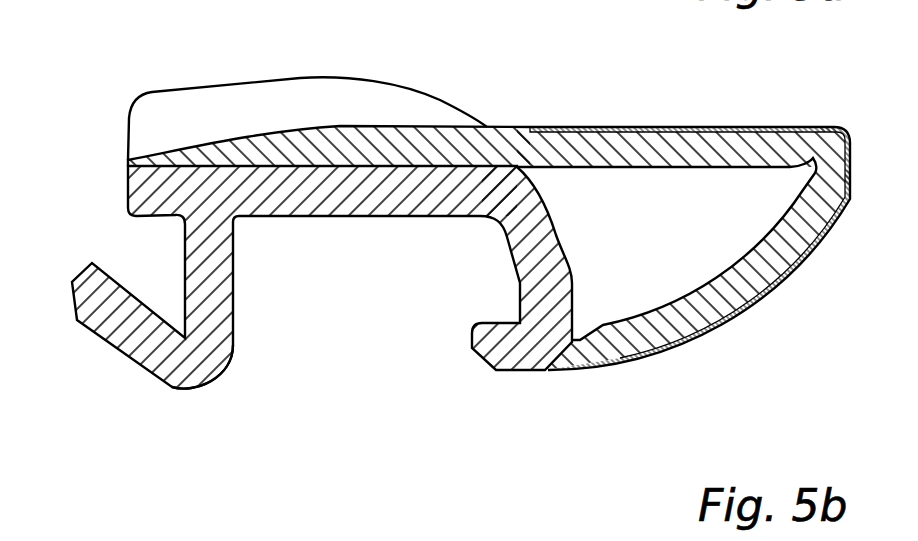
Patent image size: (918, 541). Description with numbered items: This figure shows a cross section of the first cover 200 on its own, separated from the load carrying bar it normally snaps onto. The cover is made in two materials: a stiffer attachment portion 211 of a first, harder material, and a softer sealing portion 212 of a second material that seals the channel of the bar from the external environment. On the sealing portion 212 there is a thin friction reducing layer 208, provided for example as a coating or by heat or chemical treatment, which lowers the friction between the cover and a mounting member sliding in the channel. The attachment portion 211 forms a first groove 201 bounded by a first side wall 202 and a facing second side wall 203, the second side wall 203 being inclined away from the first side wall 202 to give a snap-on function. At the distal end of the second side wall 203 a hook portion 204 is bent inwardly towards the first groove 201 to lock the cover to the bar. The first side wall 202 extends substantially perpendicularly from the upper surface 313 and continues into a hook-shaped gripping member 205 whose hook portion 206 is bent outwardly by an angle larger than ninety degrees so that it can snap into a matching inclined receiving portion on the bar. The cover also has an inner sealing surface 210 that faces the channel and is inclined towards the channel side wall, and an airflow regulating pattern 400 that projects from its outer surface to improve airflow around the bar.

The airflow regulating pattern 400 is at (302, 97).
The upper surface 313 is at (360, 127).
The sealing portion 212 is at (513, 127).
The friction reducing layer 208 is at (830, 128).
The second side wall 203 is at (512, 255).
The first groove 201 is at (355, 217).
The first side wall 202 is at (233, 287).
The hook-shaped gripping member 205 is at (108, 335).
The hook portion 206 is at (92, 318).
The attachment portion 211 is at (212, 372).
The hook portion 204 is at (485, 363).
The first cover 200 is at (545, 372).
The inner sealing surface 210 is at (760, 297).